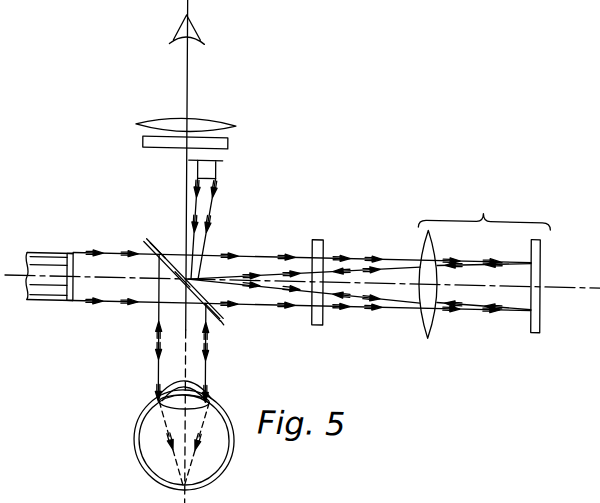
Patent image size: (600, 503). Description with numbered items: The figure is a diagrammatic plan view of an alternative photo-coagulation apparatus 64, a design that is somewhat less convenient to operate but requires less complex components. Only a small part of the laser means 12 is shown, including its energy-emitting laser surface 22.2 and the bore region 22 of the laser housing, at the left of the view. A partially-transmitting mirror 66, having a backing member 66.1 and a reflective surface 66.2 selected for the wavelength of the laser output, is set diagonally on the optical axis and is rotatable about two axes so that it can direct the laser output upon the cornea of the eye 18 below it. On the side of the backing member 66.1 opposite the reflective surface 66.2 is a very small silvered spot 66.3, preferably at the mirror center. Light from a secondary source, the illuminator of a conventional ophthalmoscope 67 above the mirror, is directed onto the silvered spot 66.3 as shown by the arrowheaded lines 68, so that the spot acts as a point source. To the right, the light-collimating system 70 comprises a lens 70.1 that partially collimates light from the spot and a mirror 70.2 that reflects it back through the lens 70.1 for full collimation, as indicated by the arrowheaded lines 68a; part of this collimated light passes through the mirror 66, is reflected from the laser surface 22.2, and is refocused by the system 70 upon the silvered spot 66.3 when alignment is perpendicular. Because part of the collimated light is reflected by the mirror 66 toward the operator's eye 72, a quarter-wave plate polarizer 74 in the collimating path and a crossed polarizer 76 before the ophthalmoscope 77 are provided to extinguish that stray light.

The laser means 12 is at (56, 272).
The bore 22 is at (47, 300).
The energy-emitting laser surface 22.2 is at (73, 258).
The partially-transmitting mirror 66 is at (184, 271).
The backing member 66.1 is at (241, 322).
The reflective surface 66.2 is at (151, 245).
The silvered spot 66.3 is at (184, 260).
The illuminator of a conventional ophthalmoscope 67 is at (216, 168).
The arrowheaded lines 68 is at (209, 203).
The arrowheaded lines 68a is at (354, 255).
The light polarizer 74 is at (316, 323).
The light-collimating system 70 is at (489, 278).
The lens 70.1 is at (433, 314).
The mirror 70.2 is at (531, 326).
The apparatus 64 is at (364, 154).
The eye of the operator 72 is at (199, 27).
The ophthalmoscope 77 is at (163, 121).
The light polarizer 76 is at (147, 142).
The eye 18 is at (230, 461).